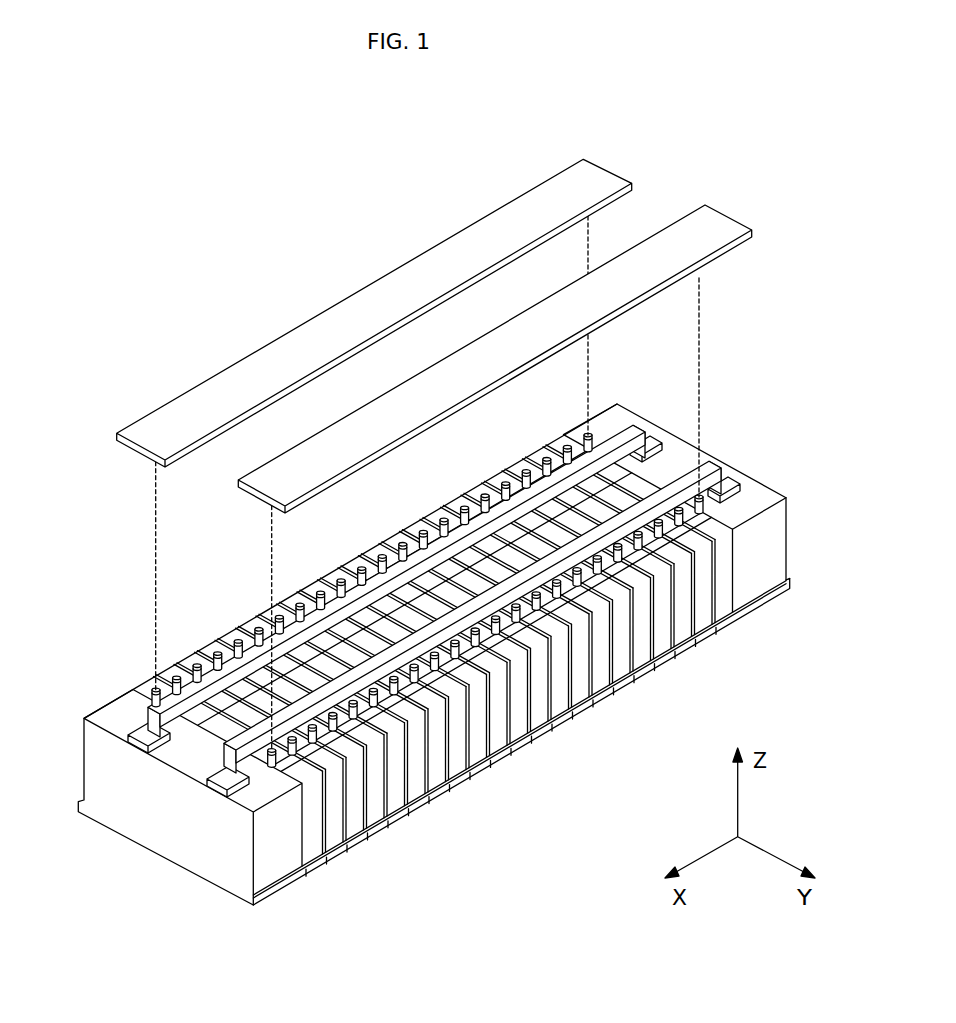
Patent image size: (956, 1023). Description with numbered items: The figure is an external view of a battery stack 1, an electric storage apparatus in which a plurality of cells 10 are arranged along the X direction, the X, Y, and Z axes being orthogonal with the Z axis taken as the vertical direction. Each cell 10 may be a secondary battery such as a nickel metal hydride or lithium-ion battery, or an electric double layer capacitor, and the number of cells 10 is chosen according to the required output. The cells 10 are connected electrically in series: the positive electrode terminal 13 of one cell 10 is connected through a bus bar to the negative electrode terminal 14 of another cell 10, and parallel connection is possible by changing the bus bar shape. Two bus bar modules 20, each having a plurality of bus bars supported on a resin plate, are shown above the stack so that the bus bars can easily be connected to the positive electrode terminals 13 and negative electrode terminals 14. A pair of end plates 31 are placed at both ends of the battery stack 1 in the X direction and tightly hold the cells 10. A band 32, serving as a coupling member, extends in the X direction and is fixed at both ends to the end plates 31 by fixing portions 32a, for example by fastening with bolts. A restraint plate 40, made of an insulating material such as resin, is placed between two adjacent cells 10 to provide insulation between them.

The battery stack 1 is at (515, 875).
The cell 10 is at (630, 495).
The positive electrode terminal 13 is at (556, 452).
The negative electrode terminal 14 is at (585, 432).
The bus bar module 20 is at (553, 190).
The end plate 31 is at (770, 558).
The band 32 is at (492, 612).
The fixing portion 32a is at (650, 443).
The restraint plate 40 is at (685, 627).